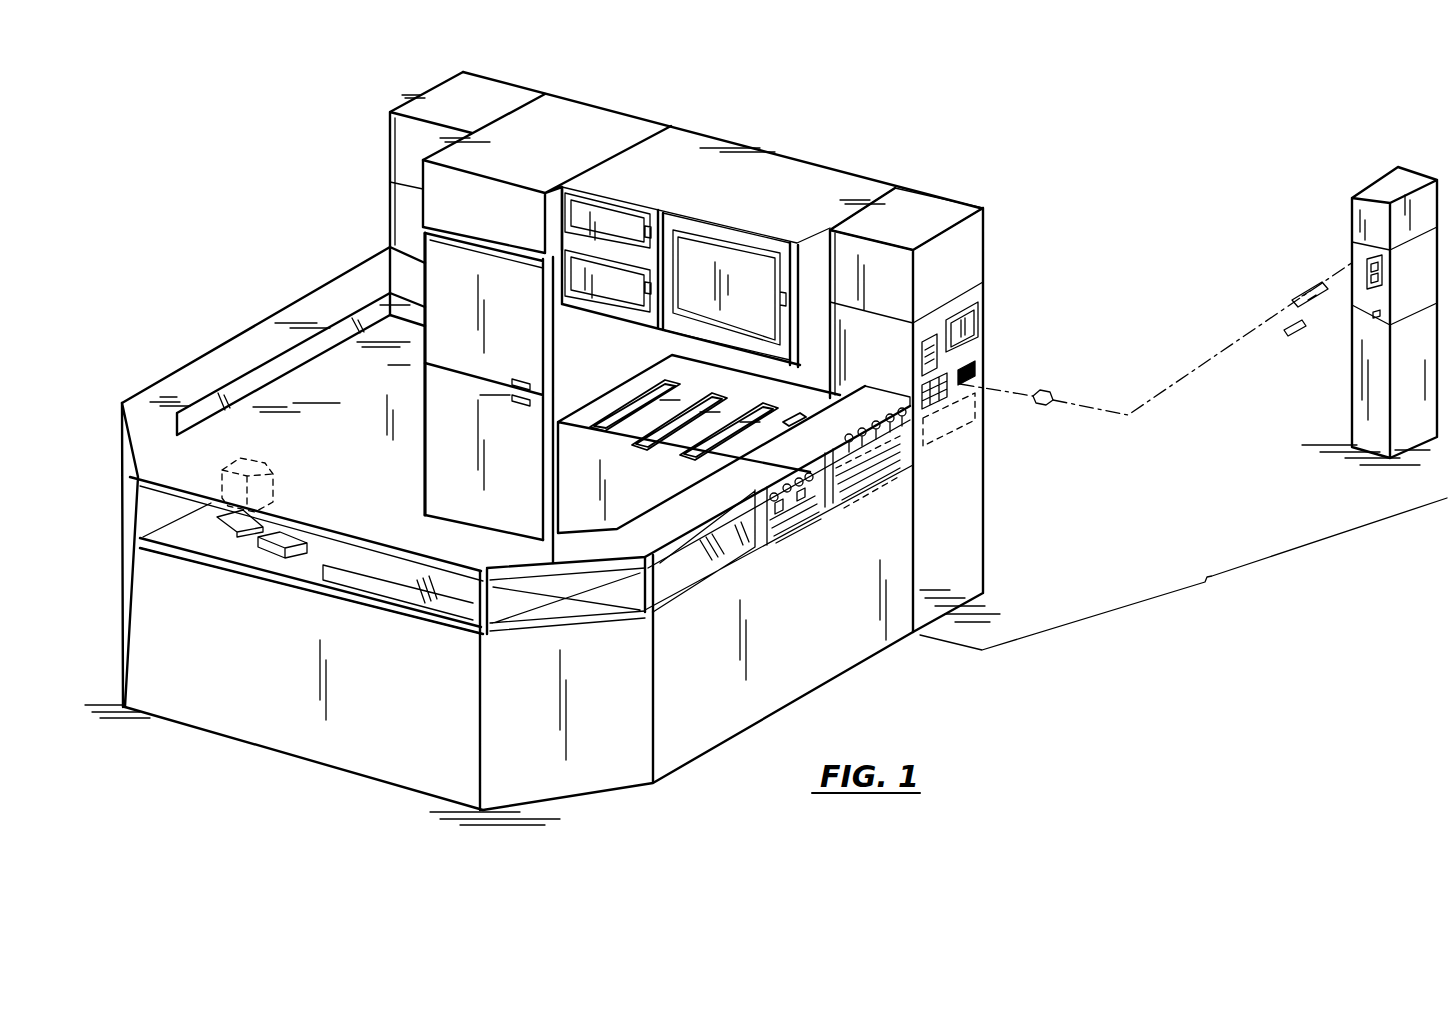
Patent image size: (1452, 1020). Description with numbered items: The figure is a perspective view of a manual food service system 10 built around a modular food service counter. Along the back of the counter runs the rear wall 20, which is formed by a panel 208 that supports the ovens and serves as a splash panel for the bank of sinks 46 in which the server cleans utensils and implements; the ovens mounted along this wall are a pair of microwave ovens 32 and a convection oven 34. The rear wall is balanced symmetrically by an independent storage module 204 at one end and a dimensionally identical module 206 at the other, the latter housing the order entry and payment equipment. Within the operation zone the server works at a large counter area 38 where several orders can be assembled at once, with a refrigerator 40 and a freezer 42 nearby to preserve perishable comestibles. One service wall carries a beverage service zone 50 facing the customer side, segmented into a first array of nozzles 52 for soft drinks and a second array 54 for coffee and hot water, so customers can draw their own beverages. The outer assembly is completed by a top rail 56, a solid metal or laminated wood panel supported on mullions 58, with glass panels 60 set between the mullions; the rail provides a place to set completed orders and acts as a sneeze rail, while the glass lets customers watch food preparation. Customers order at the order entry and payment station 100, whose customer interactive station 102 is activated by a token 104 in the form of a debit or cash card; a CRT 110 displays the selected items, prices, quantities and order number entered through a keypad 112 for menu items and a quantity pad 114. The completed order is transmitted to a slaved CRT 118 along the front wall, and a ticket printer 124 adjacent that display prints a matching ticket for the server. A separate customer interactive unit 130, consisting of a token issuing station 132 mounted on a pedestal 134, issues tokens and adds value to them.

The manual food service system 10 is at (978, 184).
The rear wall 20 is at (738, 130).
The microwave ovens 32 is at (560, 259).
The convection oven 34 is at (720, 313).
The counter area 38 is at (316, 403).
The refrigerator 40 is at (487, 326).
The freezer 42 is at (484, 446).
The bank of sinks 46 is at (702, 467).
The beverage service zone 50 is at (542, 678).
The first array of nozzles 52 is at (827, 515).
The second array 54 is at (893, 407).
The top rail 56 is at (292, 322).
The mullions 58 is at (604, 622).
The glass panels 60 is at (327, 577).
The order entry and payment station 100 is at (1183, 574).
The customer interactive station 102 is at (993, 330).
The token 104 is at (1050, 392).
The CRT 110 is at (987, 304).
The keypad 112 is at (948, 390).
The quantity pad 114 is at (985, 366).
The slaved CRT 118 is at (275, 476).
The ticket printer 124 is at (302, 530).
The customer interactive unit 130 is at (1325, 221).
The token issuing station 132 is at (1352, 312).
The pedestal 134 is at (1370, 400).
The storage module 204 is at (497, 103).
The module 206 is at (917, 192).
The panel 208 is at (826, 170).